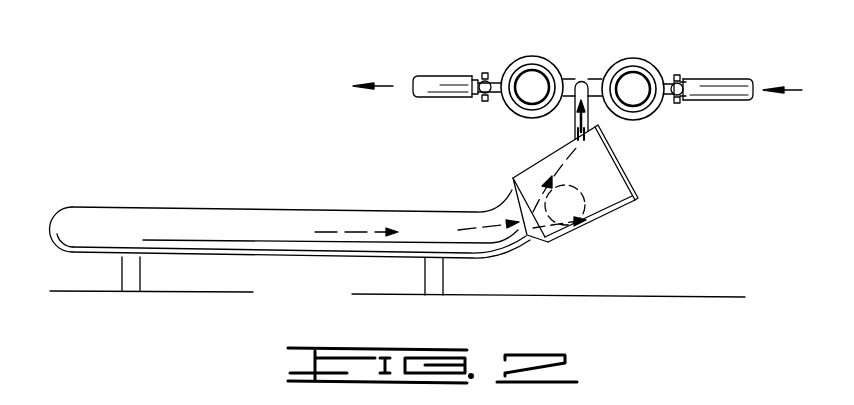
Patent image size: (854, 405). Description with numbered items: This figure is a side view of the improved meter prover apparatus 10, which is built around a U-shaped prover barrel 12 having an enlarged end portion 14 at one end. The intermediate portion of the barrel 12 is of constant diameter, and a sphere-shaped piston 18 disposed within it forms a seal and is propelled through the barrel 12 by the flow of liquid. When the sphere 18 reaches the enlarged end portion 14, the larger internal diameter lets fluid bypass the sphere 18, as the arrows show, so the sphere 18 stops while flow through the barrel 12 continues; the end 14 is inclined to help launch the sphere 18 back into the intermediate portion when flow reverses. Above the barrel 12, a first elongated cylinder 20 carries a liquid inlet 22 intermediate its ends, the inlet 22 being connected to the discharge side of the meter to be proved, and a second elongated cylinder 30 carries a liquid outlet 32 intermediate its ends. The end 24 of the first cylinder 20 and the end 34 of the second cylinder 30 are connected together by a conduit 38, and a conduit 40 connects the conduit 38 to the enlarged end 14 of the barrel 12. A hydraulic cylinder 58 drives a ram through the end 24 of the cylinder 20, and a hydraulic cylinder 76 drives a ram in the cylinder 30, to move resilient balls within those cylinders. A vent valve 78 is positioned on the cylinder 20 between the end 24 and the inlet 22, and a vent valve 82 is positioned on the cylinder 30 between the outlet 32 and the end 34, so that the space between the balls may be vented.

The meter prover apparatus 10 is at (121, 181).
The prover barrel 12 is at (276, 206).
The enlarged end portion 14 is at (618, 195).
The piston 18 is at (571, 214).
The first elongated cylinder 20 is at (629, 47).
The liquid inlet 22 is at (661, 68).
The end of first cylinder 24 is at (641, 67).
The second elongated cylinder 30 is at (541, 48).
The liquid outlet 32 is at (508, 64).
The end of second cylinder 34 is at (530, 65).
The conduit 38 is at (569, 80).
The conduit 40 is at (576, 124).
The hydraulic cylinder 58 is at (635, 98).
The hydraulic cylinder 76 is at (531, 93).
The vent valve 78 is at (683, 100).
The vent valve 82 is at (481, 96).